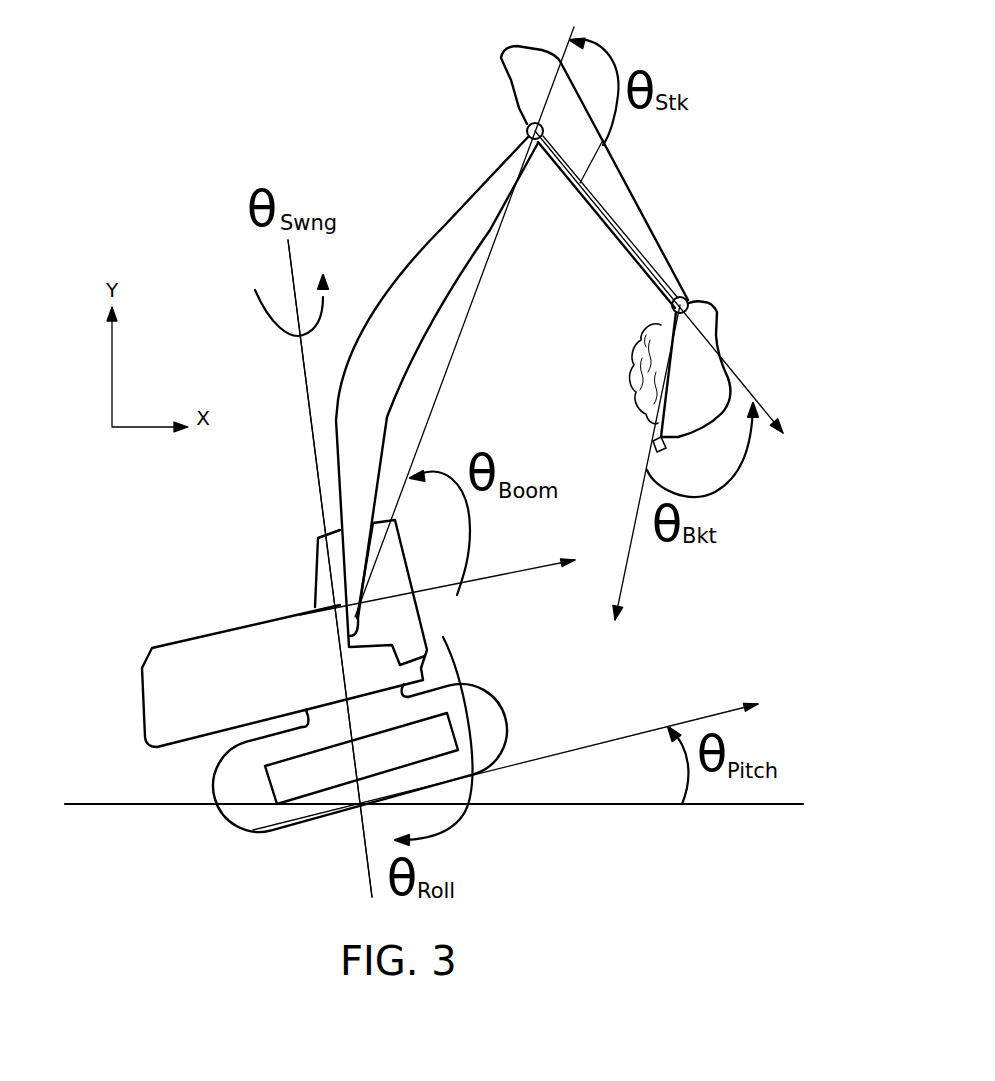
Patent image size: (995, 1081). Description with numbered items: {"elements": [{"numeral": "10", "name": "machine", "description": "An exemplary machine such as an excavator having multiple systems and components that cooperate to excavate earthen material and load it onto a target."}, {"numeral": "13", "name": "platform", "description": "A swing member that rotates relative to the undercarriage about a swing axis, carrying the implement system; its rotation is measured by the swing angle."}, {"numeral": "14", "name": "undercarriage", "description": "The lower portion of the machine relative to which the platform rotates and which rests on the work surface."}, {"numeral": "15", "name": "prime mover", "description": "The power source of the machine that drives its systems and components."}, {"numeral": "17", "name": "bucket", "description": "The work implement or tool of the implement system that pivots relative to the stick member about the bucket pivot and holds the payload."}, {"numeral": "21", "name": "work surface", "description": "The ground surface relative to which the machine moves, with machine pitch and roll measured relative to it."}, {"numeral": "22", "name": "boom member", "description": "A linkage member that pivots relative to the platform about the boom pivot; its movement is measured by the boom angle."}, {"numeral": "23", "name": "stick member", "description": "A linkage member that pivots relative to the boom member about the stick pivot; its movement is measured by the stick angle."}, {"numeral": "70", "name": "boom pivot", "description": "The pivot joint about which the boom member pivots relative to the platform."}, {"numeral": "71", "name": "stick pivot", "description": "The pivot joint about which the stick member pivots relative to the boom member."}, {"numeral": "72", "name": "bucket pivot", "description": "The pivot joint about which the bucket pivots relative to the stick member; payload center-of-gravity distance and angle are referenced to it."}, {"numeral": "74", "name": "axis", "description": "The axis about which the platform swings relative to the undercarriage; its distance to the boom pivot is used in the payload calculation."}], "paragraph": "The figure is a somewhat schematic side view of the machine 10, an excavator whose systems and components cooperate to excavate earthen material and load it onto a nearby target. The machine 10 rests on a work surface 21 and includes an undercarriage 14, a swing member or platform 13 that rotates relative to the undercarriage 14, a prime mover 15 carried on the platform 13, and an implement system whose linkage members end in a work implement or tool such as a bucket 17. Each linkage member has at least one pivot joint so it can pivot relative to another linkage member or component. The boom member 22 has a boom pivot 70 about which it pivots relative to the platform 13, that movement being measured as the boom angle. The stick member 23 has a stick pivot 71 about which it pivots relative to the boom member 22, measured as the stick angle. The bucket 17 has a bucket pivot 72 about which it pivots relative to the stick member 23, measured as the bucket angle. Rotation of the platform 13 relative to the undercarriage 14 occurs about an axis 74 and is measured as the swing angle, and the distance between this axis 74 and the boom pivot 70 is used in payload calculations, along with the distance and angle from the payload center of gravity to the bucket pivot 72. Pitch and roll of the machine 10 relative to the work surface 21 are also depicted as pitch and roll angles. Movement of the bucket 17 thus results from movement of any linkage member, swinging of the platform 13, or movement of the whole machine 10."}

The excavator 10 is at (133, 568).
The upper structure / house 13 is at (192, 727).
The undercarriage / track frame 14 is at (327, 727).
The cab 15 is at (262, 637).
The bucket 17 is at (693, 383).
The ground surface 21 is at (107, 803).
The boom 22 is at (480, 200).
The stick 23 is at (625, 215).
The boom pivot 70 is at (365, 612).
The stick pivot 71 is at (525, 128).
The bucket pivot 72 is at (690, 300).
The swing axis 74 is at (307, 393).